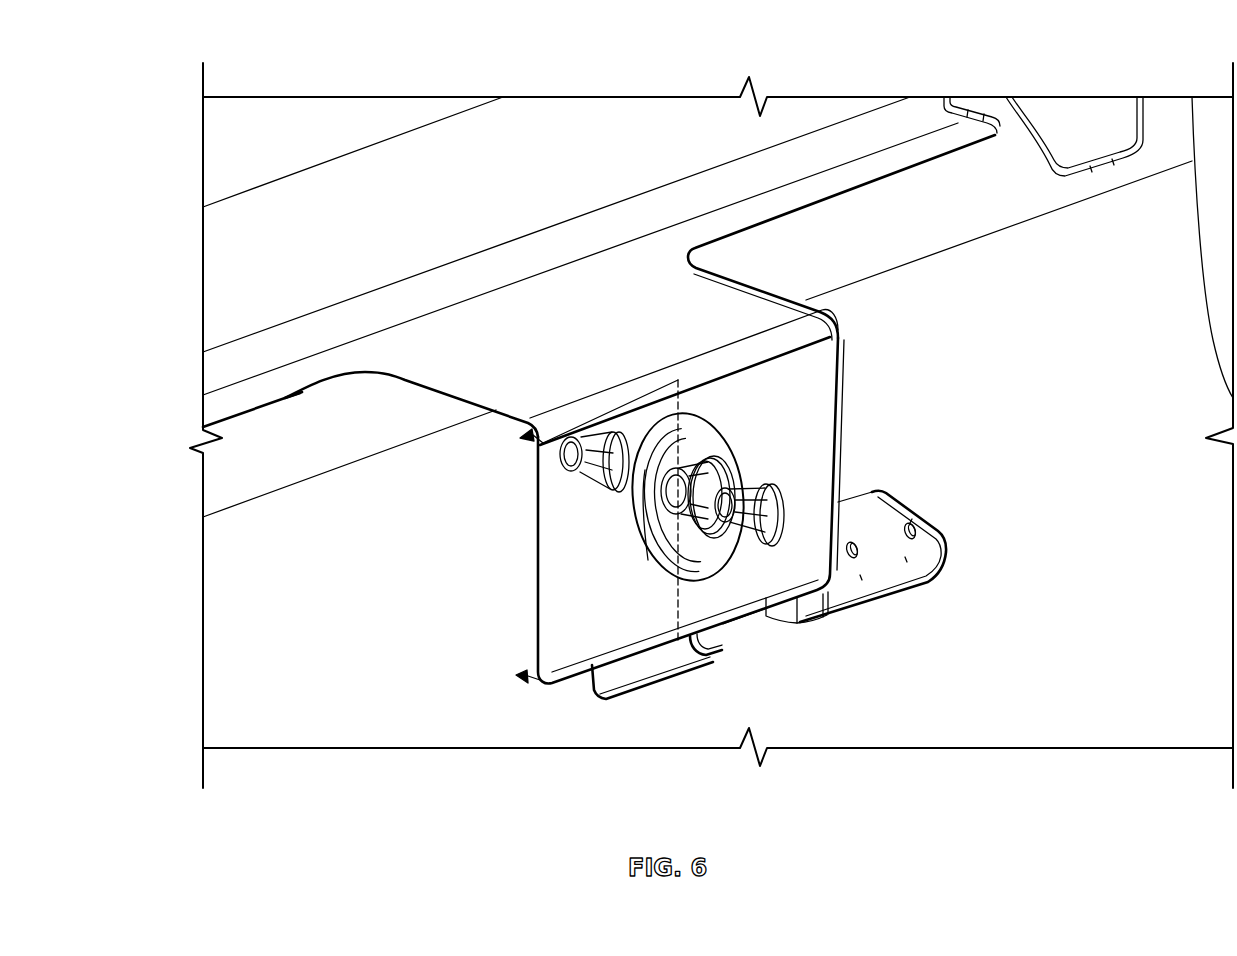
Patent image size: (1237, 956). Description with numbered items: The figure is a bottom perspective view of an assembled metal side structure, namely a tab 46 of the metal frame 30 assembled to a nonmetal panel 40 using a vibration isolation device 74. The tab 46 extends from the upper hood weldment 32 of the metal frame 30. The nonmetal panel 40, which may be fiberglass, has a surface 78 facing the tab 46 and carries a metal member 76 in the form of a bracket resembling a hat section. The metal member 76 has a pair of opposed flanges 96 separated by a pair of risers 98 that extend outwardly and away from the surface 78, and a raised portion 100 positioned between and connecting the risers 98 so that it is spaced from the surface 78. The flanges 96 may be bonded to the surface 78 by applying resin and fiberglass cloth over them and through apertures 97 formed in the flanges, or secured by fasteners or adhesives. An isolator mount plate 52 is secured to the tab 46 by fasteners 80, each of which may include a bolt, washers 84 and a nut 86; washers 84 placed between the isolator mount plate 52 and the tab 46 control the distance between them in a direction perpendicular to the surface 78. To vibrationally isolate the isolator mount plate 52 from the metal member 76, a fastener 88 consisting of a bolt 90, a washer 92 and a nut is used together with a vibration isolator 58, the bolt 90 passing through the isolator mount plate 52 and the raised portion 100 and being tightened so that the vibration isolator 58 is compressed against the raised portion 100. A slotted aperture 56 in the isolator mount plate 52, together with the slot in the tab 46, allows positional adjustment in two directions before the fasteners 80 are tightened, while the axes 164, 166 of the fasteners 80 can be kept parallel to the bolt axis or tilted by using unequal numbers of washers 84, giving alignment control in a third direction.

The metal frame 30 is at (288, 399).
The upper hood weldment 32 is at (244, 412).
The nonmetal panel 40 is at (1203, 262).
The tab 46 is at (533, 532).
The isolator mount plate 52 is at (662, 473).
The slotted aperture 56 is at (665, 505).
The vibration isolator 58 is at (723, 466).
The vibration isolation device 74 is at (798, 689).
The metal member 76 is at (885, 546).
The surface 78 is at (1030, 407).
The fasteners 80 is at (559, 474).
The washers 84 is at (600, 492).
The nut 86 is at (560, 478).
The fastener 88 is at (647, 535).
The bolt 90 is at (648, 572).
The washer 92 is at (716, 472).
The flanges 96 is at (673, 683).
The apertures 97 is at (854, 540).
The risers 98 is at (783, 623).
The raised portion 100 is at (743, 630).
The axis 164 is at (548, 489).
The axis 166 is at (695, 565).